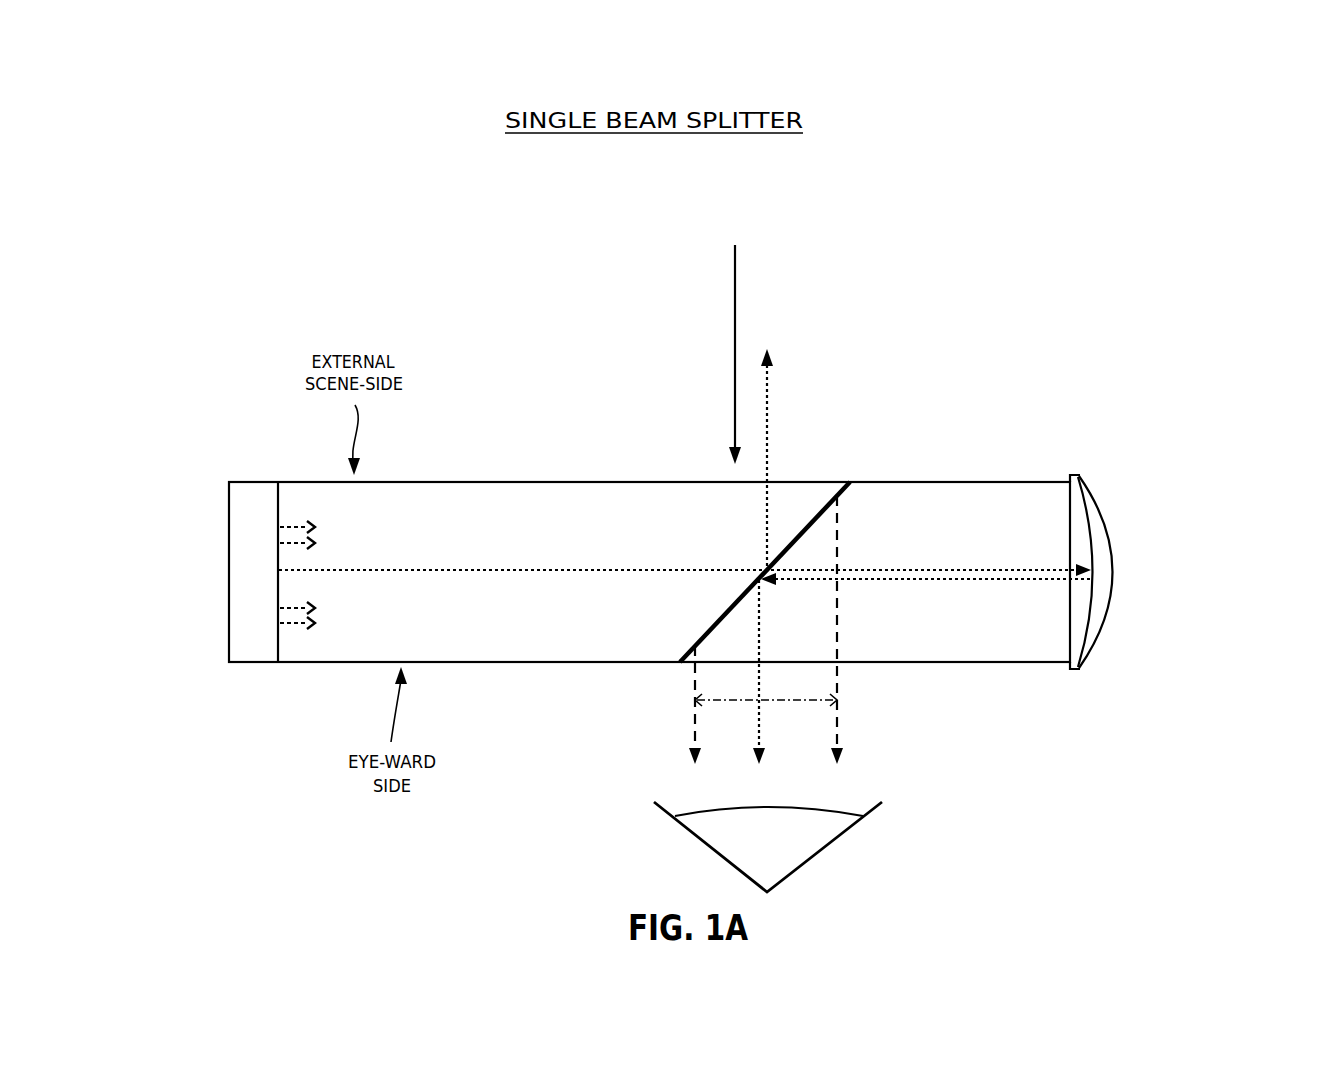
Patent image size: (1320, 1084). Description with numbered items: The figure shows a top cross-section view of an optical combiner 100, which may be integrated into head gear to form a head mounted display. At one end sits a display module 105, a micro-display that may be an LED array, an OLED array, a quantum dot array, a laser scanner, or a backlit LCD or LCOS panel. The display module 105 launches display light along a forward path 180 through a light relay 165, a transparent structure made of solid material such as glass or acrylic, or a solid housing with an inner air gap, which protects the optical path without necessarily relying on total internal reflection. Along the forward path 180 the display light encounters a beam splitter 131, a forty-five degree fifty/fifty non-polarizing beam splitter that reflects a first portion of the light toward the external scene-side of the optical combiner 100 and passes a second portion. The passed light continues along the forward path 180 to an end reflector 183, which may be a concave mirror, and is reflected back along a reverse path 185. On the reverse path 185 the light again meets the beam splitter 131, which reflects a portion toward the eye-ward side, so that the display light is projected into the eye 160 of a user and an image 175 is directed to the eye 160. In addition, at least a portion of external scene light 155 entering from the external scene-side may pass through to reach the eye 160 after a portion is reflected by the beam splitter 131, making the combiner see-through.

The optical combiner 100 is at (1068, 214).
The display module 105 is at (245, 482).
The beam splitter 131 is at (810, 522).
The external scene light 155 is at (736, 311).
The eye 160 is at (758, 862).
The light relay 165 is at (443, 482).
The image 175 is at (717, 702).
The forward path 180 is at (588, 573).
The end reflector 183 is at (1090, 623).
The reverse path 185 is at (1030, 582).